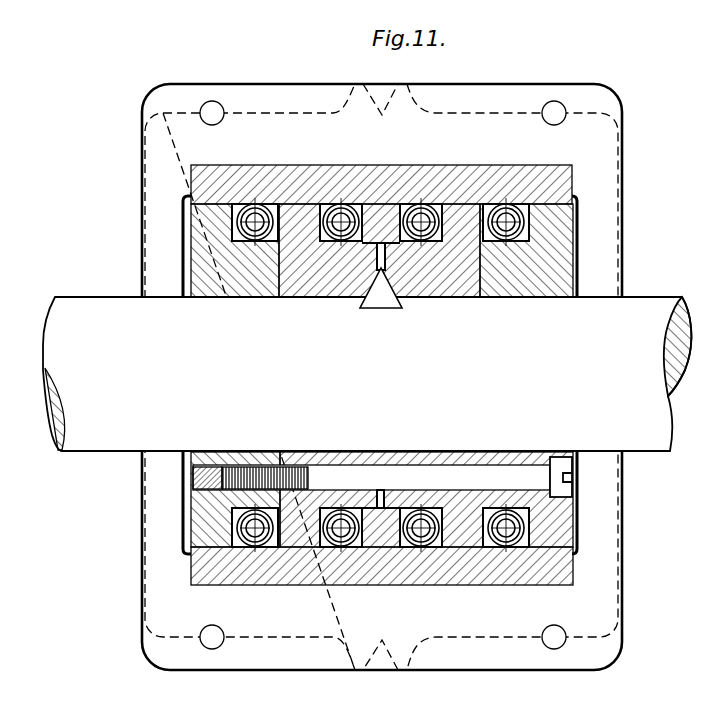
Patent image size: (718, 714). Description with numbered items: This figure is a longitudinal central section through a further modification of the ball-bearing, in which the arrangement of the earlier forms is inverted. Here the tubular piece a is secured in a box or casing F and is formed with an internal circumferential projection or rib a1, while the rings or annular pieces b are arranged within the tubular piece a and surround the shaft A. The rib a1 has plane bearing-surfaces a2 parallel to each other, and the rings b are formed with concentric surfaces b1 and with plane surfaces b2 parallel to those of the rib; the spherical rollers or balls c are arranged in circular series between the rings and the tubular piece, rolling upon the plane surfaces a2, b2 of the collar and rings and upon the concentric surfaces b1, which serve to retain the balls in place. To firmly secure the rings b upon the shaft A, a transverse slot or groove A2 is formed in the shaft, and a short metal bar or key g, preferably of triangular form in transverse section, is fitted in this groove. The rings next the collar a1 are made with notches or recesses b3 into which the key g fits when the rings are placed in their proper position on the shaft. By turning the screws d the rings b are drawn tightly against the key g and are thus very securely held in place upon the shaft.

The box or casing F is at (382, 377).
The shaft A is at (367, 374).
The transverse slot or groove A2 is at (386, 306).
The tubular piece a is at (382, 375).
The internal circumferential projection or rib a1 is at (371, 528).
The plane bearing-surfaces a2 is at (374, 547).
The rings or annular pieces b is at (382, 375).
The concentric surfaces b1 is at (410, 270).
The plane surfaces b2 is at (453, 528).
The notches or recesses b3 is at (370, 292).
The spherical rollers or balls c is at (380, 375).
The screws d is at (382, 477).
The short metal bar or key g is at (381, 289).